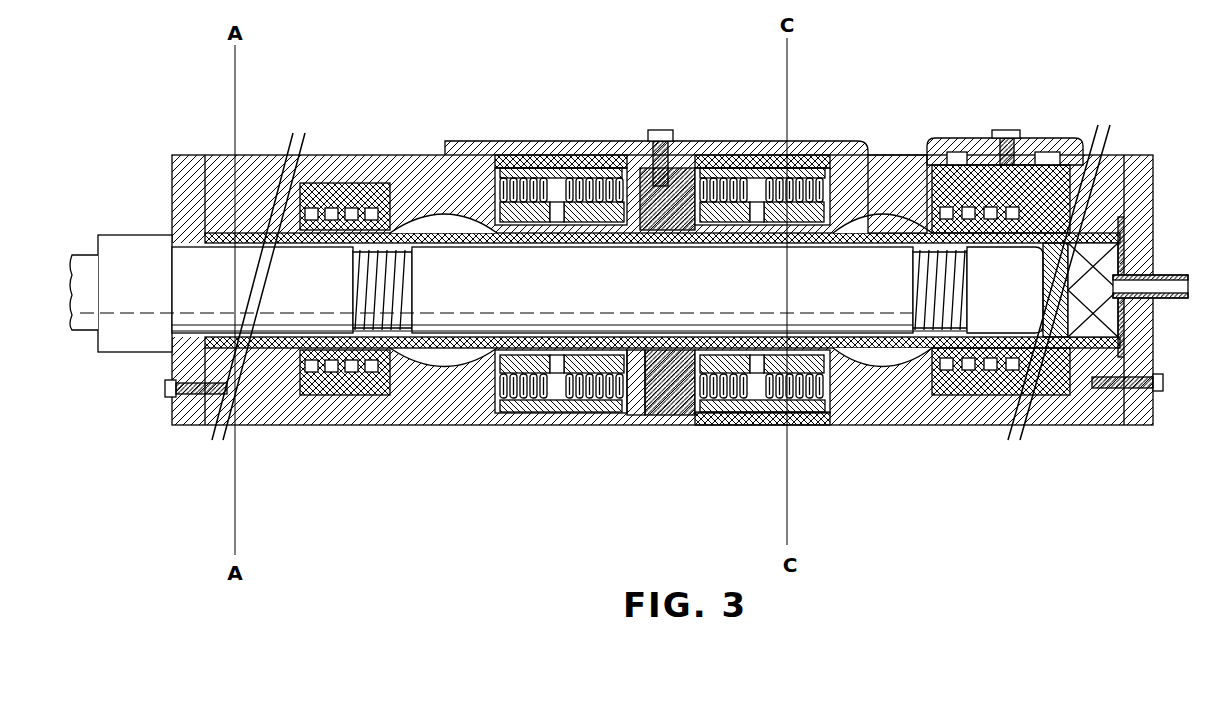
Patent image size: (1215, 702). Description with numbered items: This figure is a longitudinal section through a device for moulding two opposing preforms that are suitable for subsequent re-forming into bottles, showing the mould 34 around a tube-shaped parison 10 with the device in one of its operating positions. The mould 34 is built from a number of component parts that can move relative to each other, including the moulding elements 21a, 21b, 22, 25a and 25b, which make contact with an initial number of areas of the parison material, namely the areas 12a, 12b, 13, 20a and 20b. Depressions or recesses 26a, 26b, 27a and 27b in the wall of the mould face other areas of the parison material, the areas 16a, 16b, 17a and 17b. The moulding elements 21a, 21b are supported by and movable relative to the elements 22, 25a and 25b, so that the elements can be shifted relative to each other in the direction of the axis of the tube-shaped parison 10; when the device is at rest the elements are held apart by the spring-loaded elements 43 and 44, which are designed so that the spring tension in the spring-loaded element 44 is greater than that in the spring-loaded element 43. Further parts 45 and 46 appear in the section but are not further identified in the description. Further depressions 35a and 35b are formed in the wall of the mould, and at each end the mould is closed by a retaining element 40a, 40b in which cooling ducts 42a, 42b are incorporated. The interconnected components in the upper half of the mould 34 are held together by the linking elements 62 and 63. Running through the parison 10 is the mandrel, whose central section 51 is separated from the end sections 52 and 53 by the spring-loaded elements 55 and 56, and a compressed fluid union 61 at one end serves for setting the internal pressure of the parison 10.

The tube-shaped parison 10 is at (332, 385).
The area of material 12a is at (561, 345).
The area of material 12b is at (770, 345).
The area of material 13 is at (658, 300).
The area of material 16a is at (533, 350).
The area of material 16b is at (807, 345).
The area of material 17a is at (582, 350).
The area of material 17b is at (748, 340).
The area of material 20a is at (505, 345).
The area of material 20b is at (832, 340).
The moulding element 21a is at (550, 180).
The moulding element 21b is at (752, 180).
The moulding element 22 is at (655, 170).
The moulding element 25a is at (480, 168).
The moulding element 25b is at (828, 175).
The depression 26a is at (522, 195).
The depression 26b is at (810, 195).
The depression 27a is at (574, 195).
The depression 27b is at (740, 195).
The mould 34 is at (895, 111).
The depression 35a is at (442, 215).
The depression 35b is at (885, 215).
The retaining element 40a is at (318, 155).
The retaining element 40b is at (1068, 195).
The cooling duct 42a is at (362, 183).
The cooling duct 42b is at (992, 165).
The spring-loaded element 43 is at (505, 168).
The spring-loaded element 44 is at (615, 200).
The bearing retainer 45 is at (706, 180).
The spacer 46 is at (792, 200).
The central section 51 is at (460, 292).
The end section 52 is at (300, 292).
The end section 53 is at (1020, 300).
The spring-loaded element 55 is at (390, 330).
The spring-loaded element 56 is at (932, 335).
The compressed fluid union 61 is at (1165, 288).
The linking element 62 is at (866, 150).
The linking element 63 is at (1023, 157).